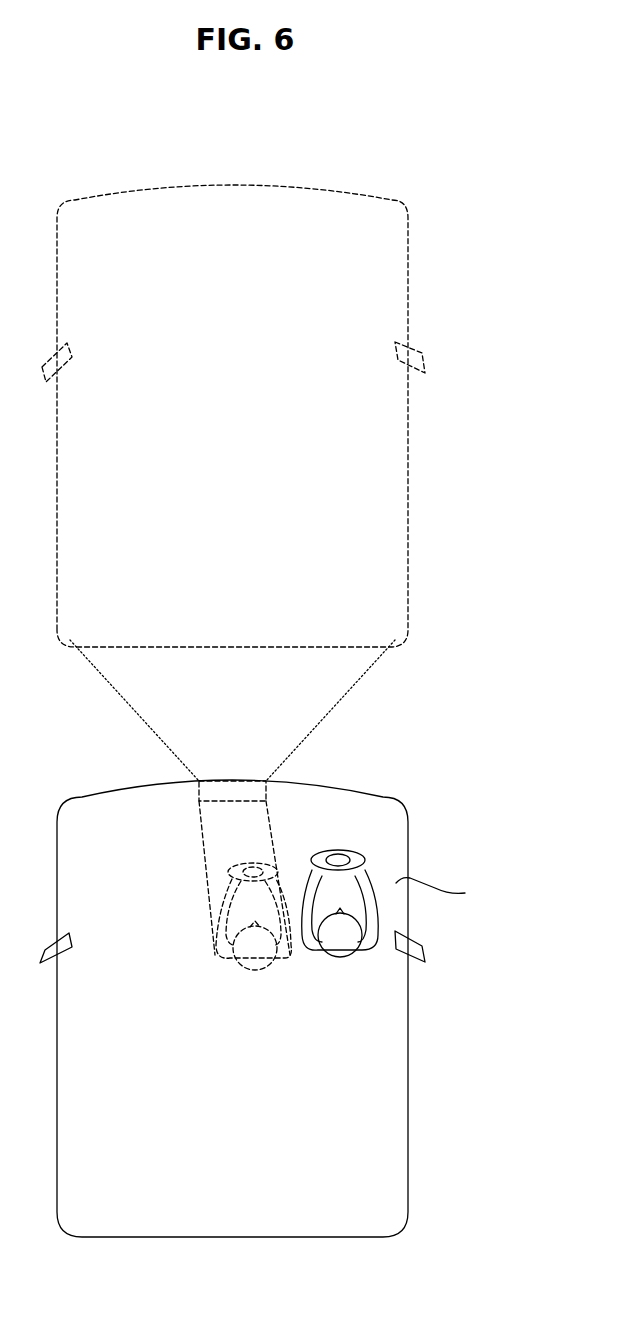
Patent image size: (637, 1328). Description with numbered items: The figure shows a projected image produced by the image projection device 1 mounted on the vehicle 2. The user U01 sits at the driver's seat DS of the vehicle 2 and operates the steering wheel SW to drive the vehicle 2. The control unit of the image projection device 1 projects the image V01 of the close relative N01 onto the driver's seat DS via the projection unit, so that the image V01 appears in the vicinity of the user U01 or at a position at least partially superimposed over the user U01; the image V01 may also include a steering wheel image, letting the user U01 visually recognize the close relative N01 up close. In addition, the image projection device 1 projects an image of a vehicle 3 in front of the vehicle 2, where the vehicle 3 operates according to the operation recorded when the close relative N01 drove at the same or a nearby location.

The image projection device 1 is at (232, 790).
The vehicle 2 is at (408, 1172).
The vehicle 3 is at (408, 432).
The driver's seat DS is at (444, 890).
The steering wheel SW is at (352, 852).
The user U01 is at (338, 957).
The close relative N01 is at (233, 956).
The image V01 is at (243, 975).